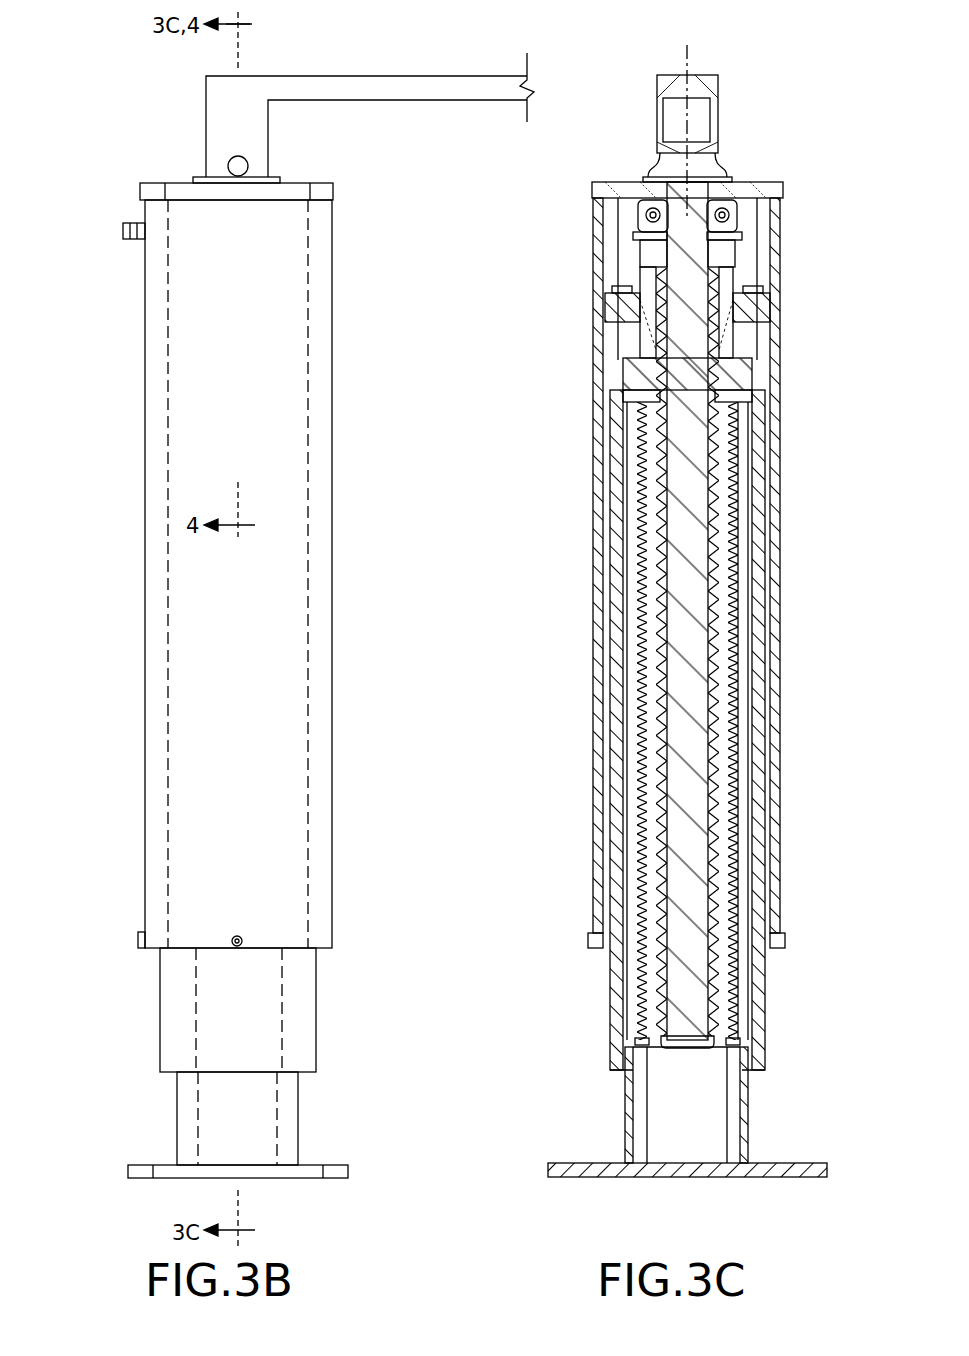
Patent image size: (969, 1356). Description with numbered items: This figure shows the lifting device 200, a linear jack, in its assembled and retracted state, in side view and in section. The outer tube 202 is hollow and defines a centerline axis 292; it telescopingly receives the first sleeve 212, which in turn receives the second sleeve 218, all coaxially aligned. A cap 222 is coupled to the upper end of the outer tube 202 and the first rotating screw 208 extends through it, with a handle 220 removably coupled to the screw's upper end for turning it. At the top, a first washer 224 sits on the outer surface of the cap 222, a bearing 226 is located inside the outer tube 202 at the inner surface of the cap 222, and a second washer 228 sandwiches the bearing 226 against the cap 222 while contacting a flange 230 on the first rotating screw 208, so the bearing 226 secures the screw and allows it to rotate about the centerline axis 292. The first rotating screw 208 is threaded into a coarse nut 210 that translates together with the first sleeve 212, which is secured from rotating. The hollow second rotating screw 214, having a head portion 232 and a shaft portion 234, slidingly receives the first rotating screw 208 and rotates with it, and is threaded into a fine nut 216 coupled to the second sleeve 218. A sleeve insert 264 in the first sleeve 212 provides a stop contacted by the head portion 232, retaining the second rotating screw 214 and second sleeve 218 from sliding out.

In FIG. 3B, the lifting device 200 is at (100, 138).
In FIG. 3C, the lifting device 200 is at (835, 103).
In FIG. 3B, the outer tube 202 is at (157, 634).
In FIG. 3C, the outer tube 202 is at (596, 578).
In FIG. 3C, the first rotating screw 208 is at (676, 478).
In FIG. 3C, the coarse nut 210 is at (750, 340).
In FIG. 3B, the first sleeve 212 is at (167, 1007).
In FIG. 3C, the first sleeve 212 is at (622, 1000).
In FIG. 3C, the second rotating screw 214 is at (645, 523).
In FIG. 3C, the fine nut 216 is at (748, 433).
In FIG. 3B, the second sleeve 218 is at (184, 1112).
In FIG. 3C, the second sleeve 218 is at (632, 1110).
In FIG. 3B, the handle 220 is at (420, 88).
In FIG. 3C, the handle 220 is at (660, 84).
In FIG. 3B, the cap 222 is at (140, 190).
In FIG. 3C, the cap 222 is at (592, 191).
In FIG. 3C, the first washer 224 is at (730, 178).
In FIG. 3C, the bearing 226 is at (724, 215).
In FIG. 3C, the second washer 228 is at (716, 236).
In FIG. 3C, the flange 230 is at (713, 244).
In FIG. 3C, the head portion 232 is at (748, 372).
In FIG. 3C, the shaft portion 234 is at (738, 555).
In FIG. 3C, the sleeve insert 264 is at (818, 1163).
In FIG. 3C, the centerline axis 292 is at (690, 56).